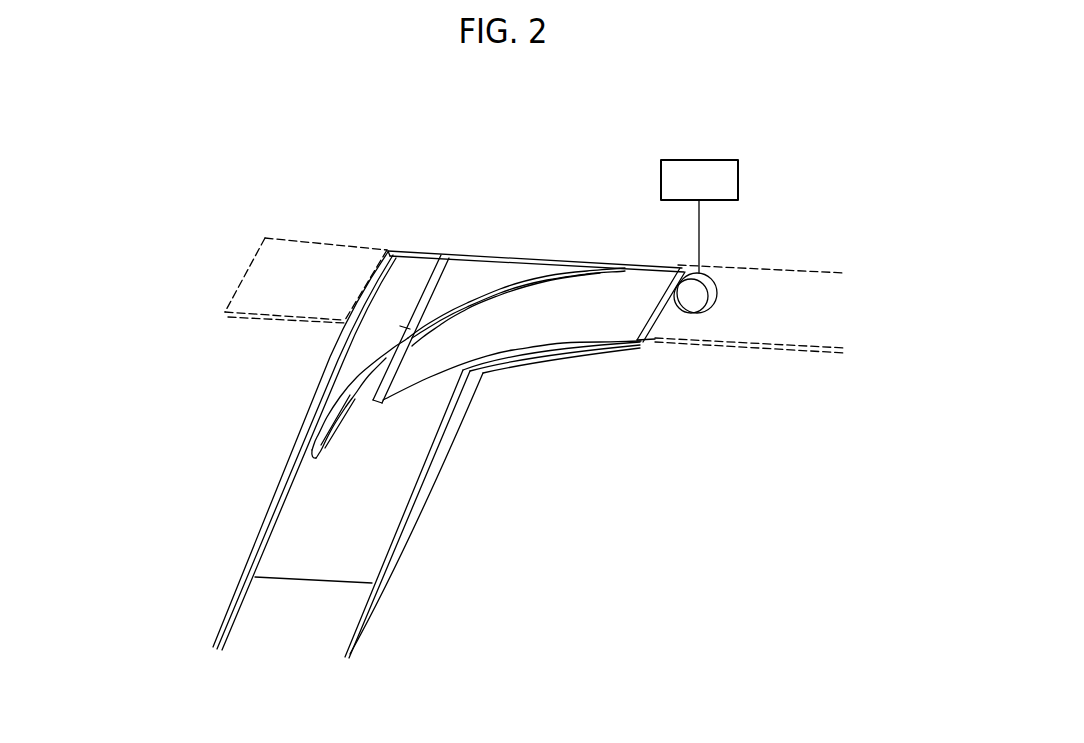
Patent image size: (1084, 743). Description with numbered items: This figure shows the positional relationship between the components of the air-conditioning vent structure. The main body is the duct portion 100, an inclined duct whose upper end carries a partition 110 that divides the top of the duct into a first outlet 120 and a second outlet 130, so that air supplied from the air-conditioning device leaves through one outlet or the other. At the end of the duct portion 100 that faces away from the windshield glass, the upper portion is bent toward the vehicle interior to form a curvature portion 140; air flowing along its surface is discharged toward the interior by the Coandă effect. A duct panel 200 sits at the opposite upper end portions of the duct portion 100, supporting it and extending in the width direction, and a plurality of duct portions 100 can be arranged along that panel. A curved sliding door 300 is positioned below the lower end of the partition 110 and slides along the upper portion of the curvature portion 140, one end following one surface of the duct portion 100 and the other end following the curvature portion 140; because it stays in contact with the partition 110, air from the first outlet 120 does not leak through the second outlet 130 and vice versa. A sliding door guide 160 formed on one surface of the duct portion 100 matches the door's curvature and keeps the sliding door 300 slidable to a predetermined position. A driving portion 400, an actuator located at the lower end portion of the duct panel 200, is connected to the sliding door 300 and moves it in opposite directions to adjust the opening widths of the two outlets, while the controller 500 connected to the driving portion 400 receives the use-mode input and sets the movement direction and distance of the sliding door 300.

The duct portion 100 is at (368, 528).
The partition 110 is at (432, 280).
The first outlet 120 is at (400, 280).
The second outlet 130 is at (470, 280).
The curvature portion 140 is at (490, 363).
The sliding door guide 160 is at (337, 405).
The duct panel 200 is at (255, 273).
The sliding door 300 is at (530, 313).
The driving portion 400 is at (693, 300).
The controller 500 is at (702, 167).